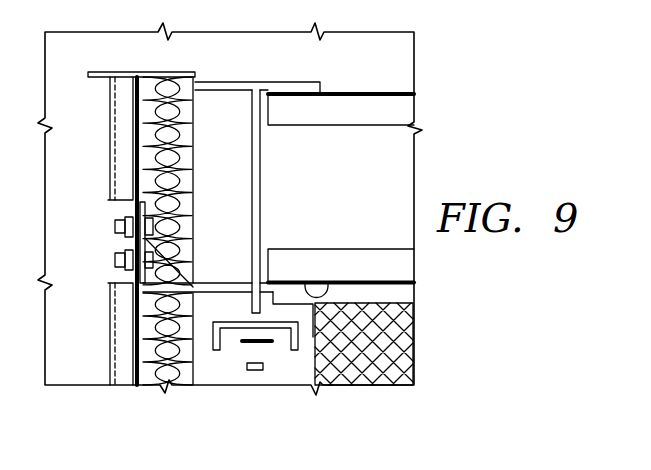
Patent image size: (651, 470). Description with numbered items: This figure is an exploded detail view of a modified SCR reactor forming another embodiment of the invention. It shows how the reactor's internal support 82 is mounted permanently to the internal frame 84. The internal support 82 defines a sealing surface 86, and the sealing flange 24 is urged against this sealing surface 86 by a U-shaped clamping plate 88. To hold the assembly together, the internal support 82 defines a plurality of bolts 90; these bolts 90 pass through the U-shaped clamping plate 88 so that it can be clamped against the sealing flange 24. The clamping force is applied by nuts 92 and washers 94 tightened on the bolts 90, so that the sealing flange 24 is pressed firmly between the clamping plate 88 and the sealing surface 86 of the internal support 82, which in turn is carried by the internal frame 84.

The sealing flange 24 is at (281, 300).
The internal support 82 is at (262, 178).
The internal frame 84 is at (132, 278).
The sealing surface 86 is at (325, 292).
The U-shaped clamping plate 88 is at (217, 352).
The bolts 90 is at (252, 232).
The nuts 92 is at (254, 372).
The washers 94 is at (265, 345).